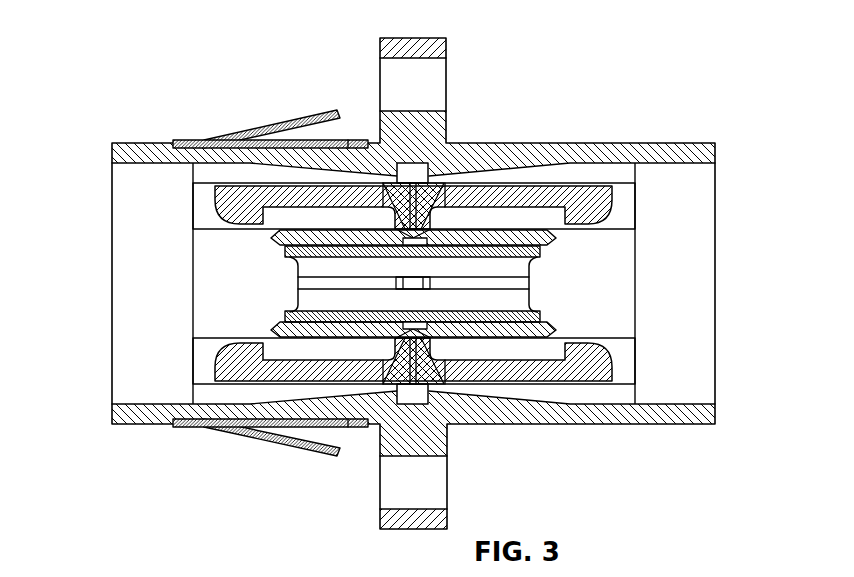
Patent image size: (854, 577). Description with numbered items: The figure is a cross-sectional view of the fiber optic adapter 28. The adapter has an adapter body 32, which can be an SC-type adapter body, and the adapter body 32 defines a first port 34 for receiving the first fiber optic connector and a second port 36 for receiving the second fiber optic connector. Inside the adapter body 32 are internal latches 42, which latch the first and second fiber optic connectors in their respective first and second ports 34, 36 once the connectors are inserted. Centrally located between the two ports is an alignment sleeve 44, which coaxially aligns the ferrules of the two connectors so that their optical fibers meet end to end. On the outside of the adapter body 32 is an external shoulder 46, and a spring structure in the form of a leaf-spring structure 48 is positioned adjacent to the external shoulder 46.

The fiber optic adapter 28 is at (376, 271).
The adapter body 32 is at (604, 143).
The first port 34 is at (670, 405).
The second port 36 is at (118, 413).
The internal latches 42 is at (612, 200).
The alignment sleeve 44 is at (513, 258).
The external shoulder 46 is at (447, 46).
The leaf-spring structure 48 is at (282, 121).